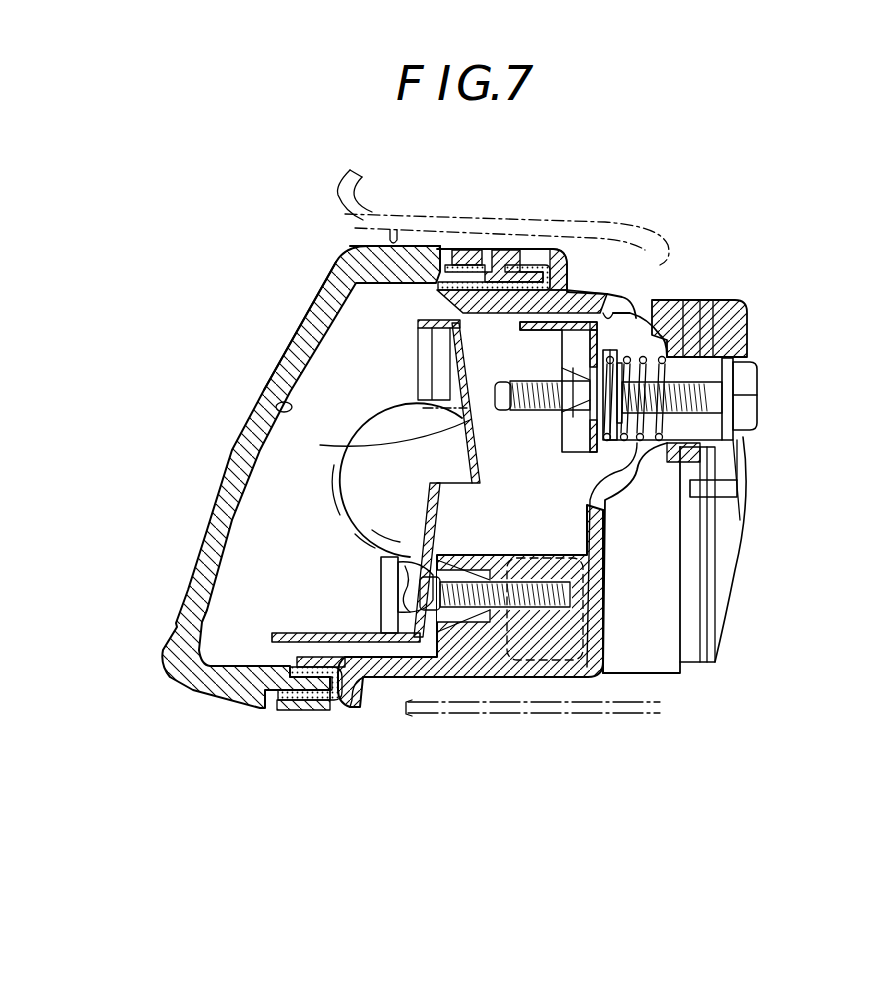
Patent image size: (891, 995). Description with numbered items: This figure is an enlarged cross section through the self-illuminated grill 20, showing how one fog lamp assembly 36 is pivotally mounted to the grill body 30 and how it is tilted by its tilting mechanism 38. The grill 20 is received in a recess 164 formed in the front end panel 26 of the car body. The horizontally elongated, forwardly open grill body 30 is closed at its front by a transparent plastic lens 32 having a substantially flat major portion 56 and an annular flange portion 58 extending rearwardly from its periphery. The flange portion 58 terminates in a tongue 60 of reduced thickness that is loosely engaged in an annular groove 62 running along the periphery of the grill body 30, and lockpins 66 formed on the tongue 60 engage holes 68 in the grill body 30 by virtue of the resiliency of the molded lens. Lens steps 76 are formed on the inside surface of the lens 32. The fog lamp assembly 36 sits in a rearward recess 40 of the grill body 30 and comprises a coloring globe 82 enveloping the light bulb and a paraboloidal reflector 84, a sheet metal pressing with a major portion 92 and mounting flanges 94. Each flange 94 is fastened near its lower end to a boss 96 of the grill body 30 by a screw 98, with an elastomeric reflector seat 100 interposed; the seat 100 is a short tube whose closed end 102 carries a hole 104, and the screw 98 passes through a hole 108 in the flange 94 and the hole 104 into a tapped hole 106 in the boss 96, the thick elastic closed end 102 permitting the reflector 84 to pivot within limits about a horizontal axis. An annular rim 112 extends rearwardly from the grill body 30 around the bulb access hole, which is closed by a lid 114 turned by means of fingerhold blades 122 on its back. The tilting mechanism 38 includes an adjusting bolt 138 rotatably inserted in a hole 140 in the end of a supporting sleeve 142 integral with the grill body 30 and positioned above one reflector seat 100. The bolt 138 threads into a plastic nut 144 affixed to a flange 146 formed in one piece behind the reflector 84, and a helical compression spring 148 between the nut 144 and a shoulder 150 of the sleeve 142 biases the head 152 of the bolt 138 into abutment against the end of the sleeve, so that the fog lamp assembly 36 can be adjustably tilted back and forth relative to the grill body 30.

The self-illuminated grill 20 is at (196, 243).
The front end panel 26 is at (340, 182).
The grill body 30 is at (655, 320).
The lens 32 is at (302, 312).
The fog lamp assembly 36 is at (332, 504).
The tilting mechanism 38 is at (755, 356).
The rearward recess 40 is at (612, 310).
The major portion 56 is at (291, 340).
The flange portion 58 is at (360, 243).
The tongue 60 is at (470, 265).
The annular groove 62 is at (532, 270).
The lockpins 66 is at (497, 260).
The holes 68 is at (523, 258).
The lens steps 76 is at (260, 402).
The coloring globe 82 is at (377, 420).
The paraboloidal reflector 84 is at (405, 345).
The major portion 92 is at (381, 437).
The mounting flanges 94 is at (433, 520).
The bosses 96 is at (580, 628).
The screws 98 is at (400, 575).
The reflector seats 100 is at (453, 640).
The closed end 102 is at (397, 650).
The hole 104 is at (397, 603).
The tapped holes 106 is at (540, 582).
The holes 108 is at (398, 572).
The annular rim 112 is at (692, 663).
The lid 114 is at (747, 505).
The fingerhold blades 122 is at (737, 487).
The adjusting bolt 138 is at (523, 380).
The hole 140 is at (757, 352).
The supporting sleeve 142 is at (662, 348).
The nut 144 is at (573, 420).
The flange 146 is at (590, 443).
The helical compression spring 148 is at (737, 452).
The shoulder 150 is at (675, 332).
The head 152 is at (757, 397).
The recess 164 is at (393, 236).